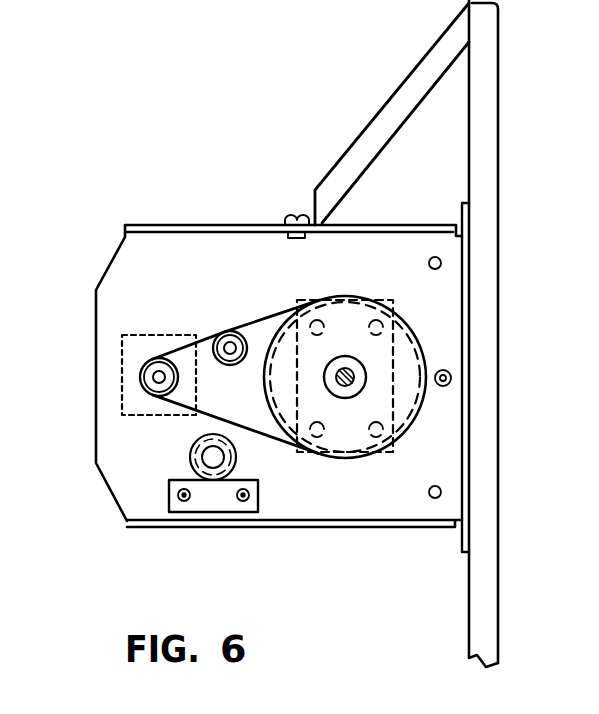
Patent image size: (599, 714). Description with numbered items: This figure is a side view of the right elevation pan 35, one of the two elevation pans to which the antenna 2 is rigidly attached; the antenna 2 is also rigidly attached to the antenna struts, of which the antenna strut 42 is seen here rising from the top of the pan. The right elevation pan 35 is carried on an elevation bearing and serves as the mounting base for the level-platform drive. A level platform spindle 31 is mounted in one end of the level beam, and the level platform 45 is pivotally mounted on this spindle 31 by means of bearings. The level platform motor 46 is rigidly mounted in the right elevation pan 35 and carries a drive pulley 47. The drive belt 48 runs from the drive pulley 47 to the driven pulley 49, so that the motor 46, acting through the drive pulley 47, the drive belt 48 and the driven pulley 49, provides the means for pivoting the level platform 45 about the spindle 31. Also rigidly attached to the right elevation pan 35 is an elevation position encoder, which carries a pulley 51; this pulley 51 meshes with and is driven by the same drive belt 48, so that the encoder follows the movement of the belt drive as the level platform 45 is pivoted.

The antenna 2 is at (498, 376).
The level platform spindle 31 is at (352, 374).
The right elevation pan 35 is at (123, 240).
The antenna strut 42 is at (390, 98).
The level platform 45 is at (393, 413).
The level platform motor 46 is at (122, 389).
The drive pulley 47 is at (150, 360).
The drive belt 48 is at (265, 320).
The driven pulley 49 is at (345, 459).
The pulley 51 is at (228, 332).